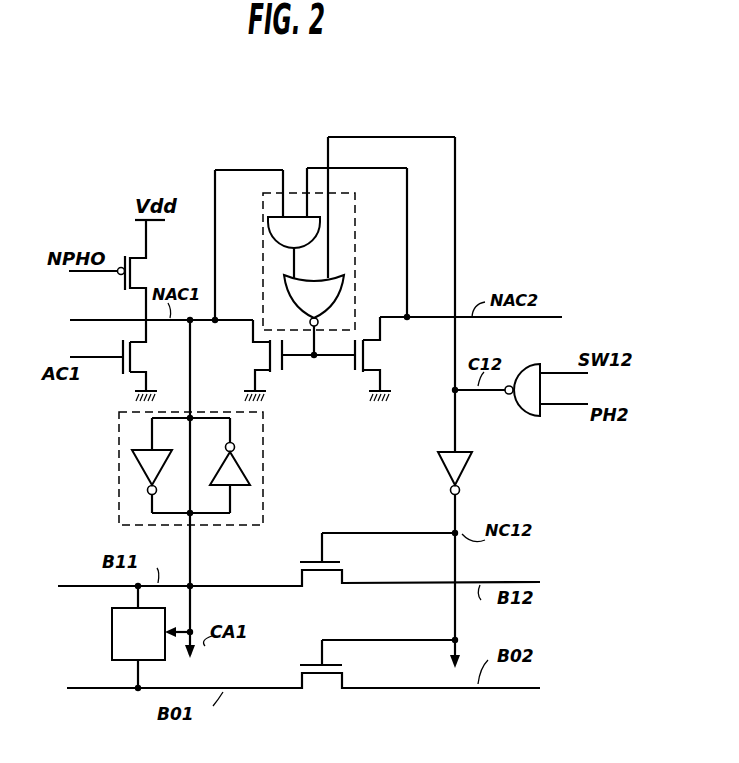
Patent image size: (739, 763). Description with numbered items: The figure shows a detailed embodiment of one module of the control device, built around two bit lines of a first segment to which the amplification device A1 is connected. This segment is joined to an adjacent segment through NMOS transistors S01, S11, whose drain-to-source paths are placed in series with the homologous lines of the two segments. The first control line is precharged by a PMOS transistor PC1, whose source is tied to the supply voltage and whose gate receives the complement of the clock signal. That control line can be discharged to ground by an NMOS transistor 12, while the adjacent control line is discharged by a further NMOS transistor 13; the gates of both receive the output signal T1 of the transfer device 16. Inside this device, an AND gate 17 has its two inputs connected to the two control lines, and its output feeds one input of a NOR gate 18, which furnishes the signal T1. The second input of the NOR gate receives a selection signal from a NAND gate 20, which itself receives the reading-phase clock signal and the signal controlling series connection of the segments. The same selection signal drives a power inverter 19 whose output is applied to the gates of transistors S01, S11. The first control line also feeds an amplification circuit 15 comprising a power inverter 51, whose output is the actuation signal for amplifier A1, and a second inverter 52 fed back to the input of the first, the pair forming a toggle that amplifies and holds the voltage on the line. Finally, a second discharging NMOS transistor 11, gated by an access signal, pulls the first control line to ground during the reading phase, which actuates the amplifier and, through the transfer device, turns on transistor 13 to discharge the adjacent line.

The NMOS transistor 11 is at (140, 372).
The NMOS transistor 12 is at (263, 367).
The NMOS transistor 13 is at (380, 368).
The amplification circuit 15 is at (119, 437).
The transfer device 16 is at (356, 245).
The AND gate 17 is at (275, 232).
The NOR gate 18 is at (284, 292).
The power inverter 19 is at (468, 470).
The NAND gate 20 is at (528, 365).
The power inverter 51 is at (140, 458).
The second inverter 52 is at (250, 473).
The PMOS transistor PC1 is at (138, 280).
The output signal T1 is at (312, 357).
The NMOS transistor S11 is at (312, 586).
The NMOS transistor S01 is at (312, 689).
The amplification device A1 is at (120, 642).